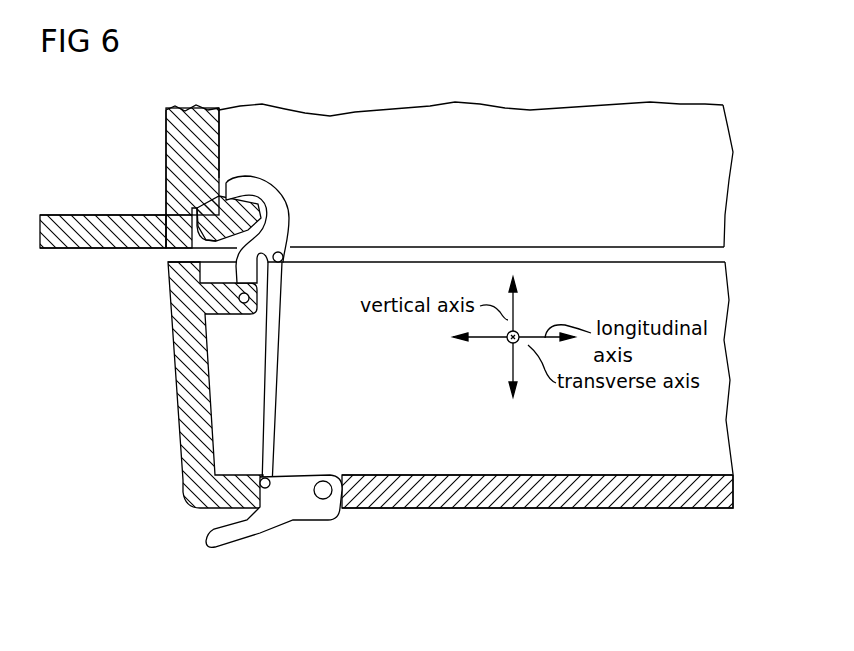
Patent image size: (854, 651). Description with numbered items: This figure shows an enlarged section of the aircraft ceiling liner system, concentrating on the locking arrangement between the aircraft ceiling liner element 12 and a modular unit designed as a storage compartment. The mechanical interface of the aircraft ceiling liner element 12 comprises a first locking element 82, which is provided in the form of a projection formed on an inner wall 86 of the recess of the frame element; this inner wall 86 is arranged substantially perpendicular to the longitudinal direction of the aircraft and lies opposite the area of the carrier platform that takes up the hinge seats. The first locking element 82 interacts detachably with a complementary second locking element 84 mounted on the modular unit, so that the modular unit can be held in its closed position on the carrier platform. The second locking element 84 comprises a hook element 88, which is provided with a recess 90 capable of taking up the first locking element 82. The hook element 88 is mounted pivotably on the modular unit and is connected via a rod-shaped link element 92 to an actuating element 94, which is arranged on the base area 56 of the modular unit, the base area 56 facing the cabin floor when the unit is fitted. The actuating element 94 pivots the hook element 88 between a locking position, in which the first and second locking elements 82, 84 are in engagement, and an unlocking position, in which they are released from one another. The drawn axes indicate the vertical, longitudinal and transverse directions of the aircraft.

The aircraft ceiling liner element 12 is at (87, 208).
The base area 56 is at (606, 474).
The first locking element 82 is at (270, 197).
The second locking element 84 is at (299, 198).
The inner wall 86 is at (222, 144).
The hook element 88 is at (296, 218).
The recess 90 is at (282, 261).
The rod-shaped link element 92 is at (284, 376).
The actuating element 94 is at (296, 534).